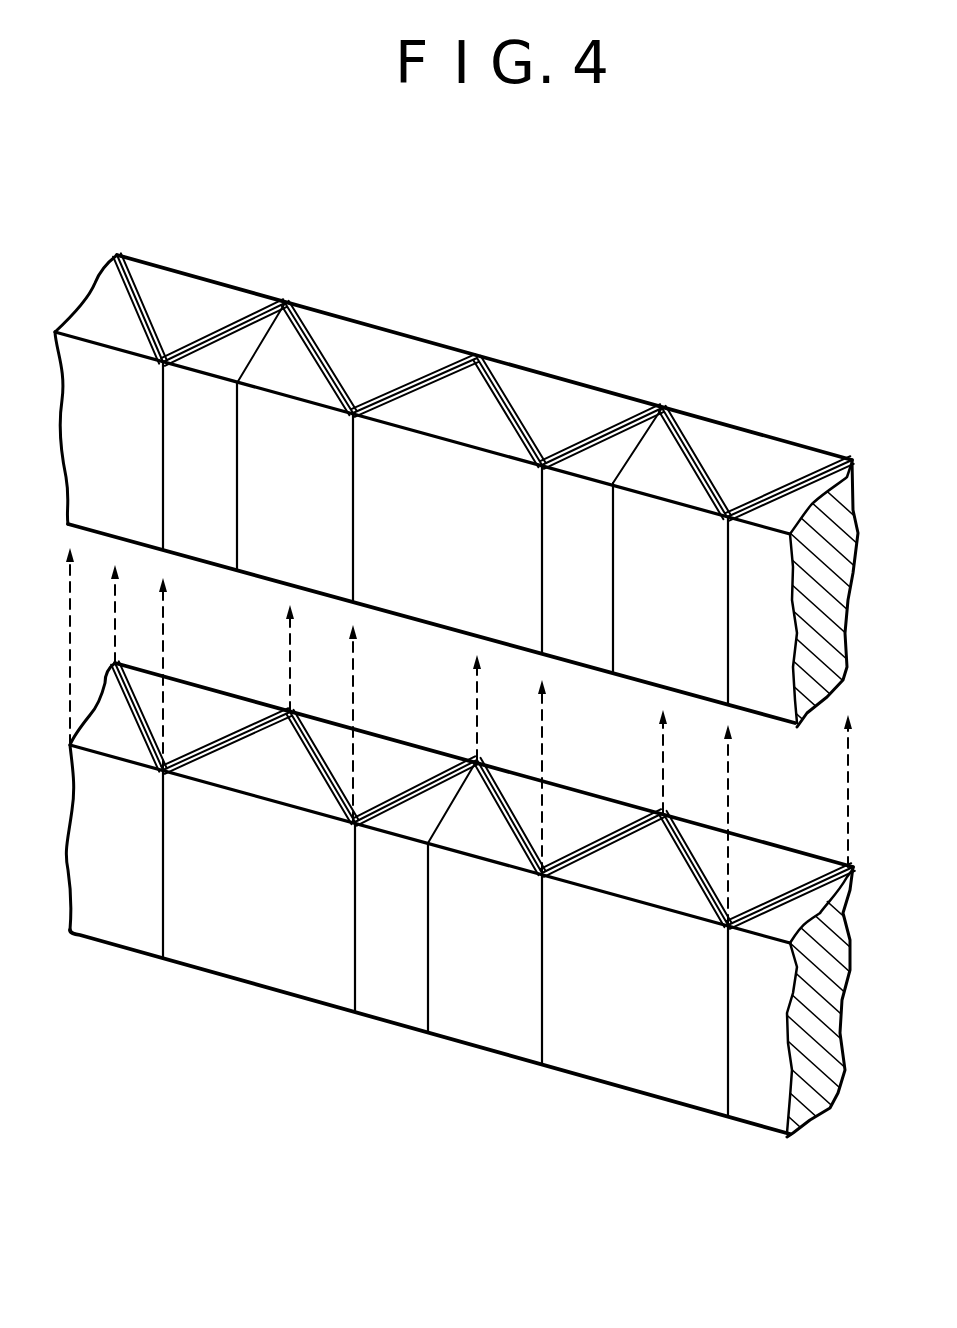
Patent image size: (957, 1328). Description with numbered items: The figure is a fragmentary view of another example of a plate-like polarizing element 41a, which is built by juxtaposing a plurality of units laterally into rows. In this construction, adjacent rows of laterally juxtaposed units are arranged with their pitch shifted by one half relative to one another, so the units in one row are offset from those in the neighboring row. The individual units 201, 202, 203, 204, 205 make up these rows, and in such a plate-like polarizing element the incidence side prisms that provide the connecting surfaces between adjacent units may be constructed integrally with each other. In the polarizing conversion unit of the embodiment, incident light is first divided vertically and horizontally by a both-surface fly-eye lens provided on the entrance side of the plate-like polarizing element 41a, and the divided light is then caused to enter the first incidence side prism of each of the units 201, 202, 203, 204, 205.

The unit 201 is at (200, 288).
The unit 202 is at (527, 380).
The unit 203 is at (752, 442).
The unit 204 is at (242, 973).
The unit 205 is at (632, 1078).
The plate-like polarizing element 41a is at (473, 930).